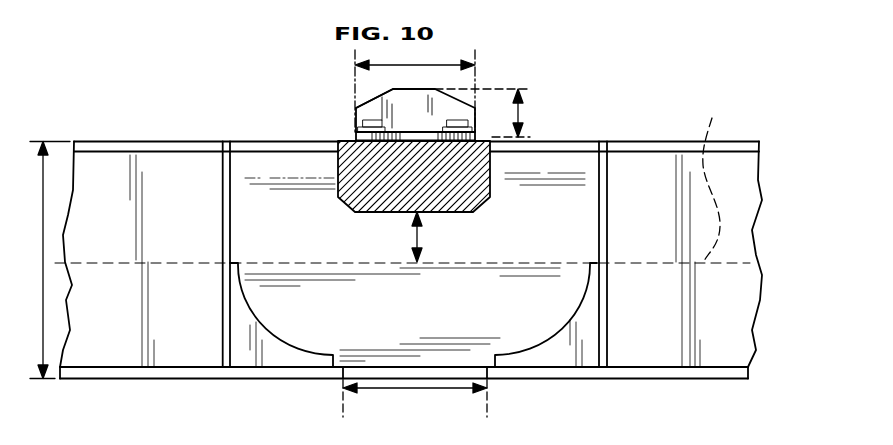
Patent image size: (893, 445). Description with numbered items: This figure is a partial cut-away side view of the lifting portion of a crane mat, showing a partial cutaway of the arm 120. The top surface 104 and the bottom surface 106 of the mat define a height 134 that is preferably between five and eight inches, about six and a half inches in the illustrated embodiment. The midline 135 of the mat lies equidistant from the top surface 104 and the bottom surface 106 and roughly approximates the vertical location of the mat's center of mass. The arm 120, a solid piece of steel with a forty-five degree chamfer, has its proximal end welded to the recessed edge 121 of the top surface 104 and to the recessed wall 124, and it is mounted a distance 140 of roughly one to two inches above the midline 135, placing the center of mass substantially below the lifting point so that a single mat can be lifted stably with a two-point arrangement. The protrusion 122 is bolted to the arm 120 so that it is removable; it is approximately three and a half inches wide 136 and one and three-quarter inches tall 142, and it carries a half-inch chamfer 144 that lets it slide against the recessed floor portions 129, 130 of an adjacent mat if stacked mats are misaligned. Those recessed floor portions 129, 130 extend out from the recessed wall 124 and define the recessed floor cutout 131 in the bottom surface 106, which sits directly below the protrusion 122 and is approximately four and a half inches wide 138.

The top surface 104 is at (133, 147).
The bottom surface 106 is at (118, 372).
The arm 120 is at (488, 167).
The recessed edge 121 is at (278, 143).
The protrusion 122 is at (362, 109).
The recessed wall 124 is at (583, 197).
The recessed floor portion 129 is at (287, 374).
The recessed floor portion 130 is at (543, 372).
The recessed floor cutout 131 is at (457, 375).
The height 134 is at (46, 197).
The midline 135 is at (713, 180).
The width 136 is at (442, 65).
The width 138 is at (410, 390).
The offset 140 is at (422, 237).
The height 142 is at (522, 113).
The chamfer 144 is at (362, 95).